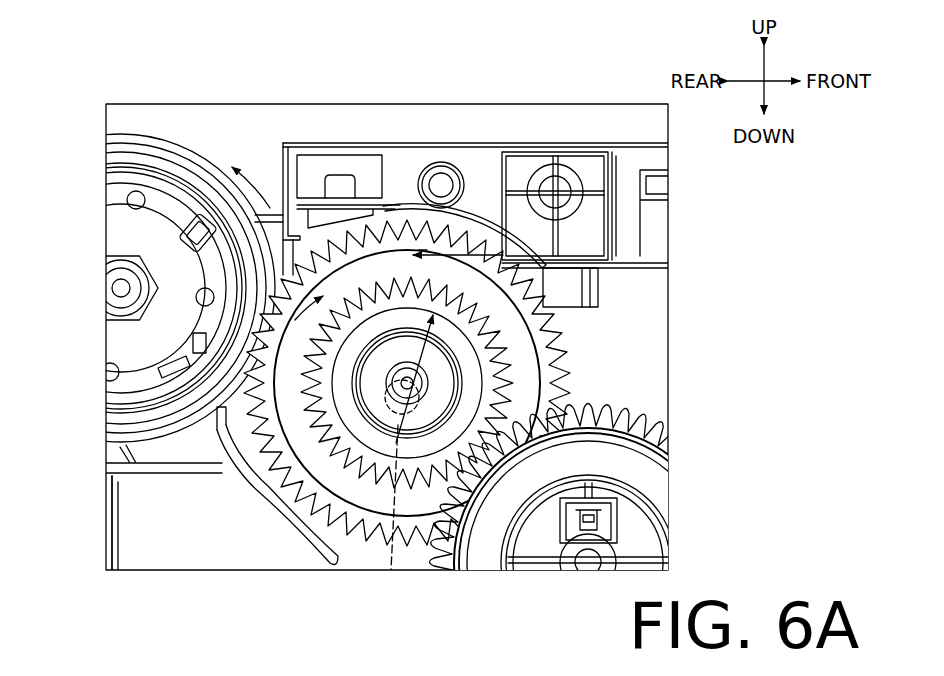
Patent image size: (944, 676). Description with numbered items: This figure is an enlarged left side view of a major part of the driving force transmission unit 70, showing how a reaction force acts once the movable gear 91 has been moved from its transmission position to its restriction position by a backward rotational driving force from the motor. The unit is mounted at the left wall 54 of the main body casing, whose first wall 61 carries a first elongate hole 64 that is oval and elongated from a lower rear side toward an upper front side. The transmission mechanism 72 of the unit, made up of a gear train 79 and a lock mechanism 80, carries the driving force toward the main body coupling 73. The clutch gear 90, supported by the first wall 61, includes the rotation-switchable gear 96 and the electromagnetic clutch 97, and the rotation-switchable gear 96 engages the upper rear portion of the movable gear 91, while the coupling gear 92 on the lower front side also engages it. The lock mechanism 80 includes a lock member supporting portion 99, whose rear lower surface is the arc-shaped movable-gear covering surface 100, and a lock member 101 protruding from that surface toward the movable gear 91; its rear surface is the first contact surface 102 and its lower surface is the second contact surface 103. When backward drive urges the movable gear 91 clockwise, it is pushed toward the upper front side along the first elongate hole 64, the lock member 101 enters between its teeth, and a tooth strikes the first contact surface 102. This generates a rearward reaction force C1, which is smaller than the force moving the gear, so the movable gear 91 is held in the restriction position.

The clutch gear 90 is at (177, 138).
The rotation-switchable gear 96 is at (213, 162).
The electromagnetic clutch 97 is at (122, 242).
The first wall 61 is at (133, 533).
The left wall 54 is at (74, 536).
The driving force transmission unit 70 is at (260, 473).
The transmission mechanism 72 is at (275, 493).
The gear train 79 is at (295, 515).
The movable gear 91 is at (330, 520).
The first elongate hole 64 is at (389, 600).
The reaction force C1 is at (423, 250).
The lock mechanism 80 is at (613, 140).
The movable-gear covering surface 100 is at (397, 213).
The first contact surface 102 is at (490, 215).
The lock member supporting portion 99 is at (573, 141).
The second contact surface 103 is at (547, 268).
The lock member 101 is at (505, 257).
The coupling gear 92 is at (655, 428).
The main body coupling 73 is at (652, 472).